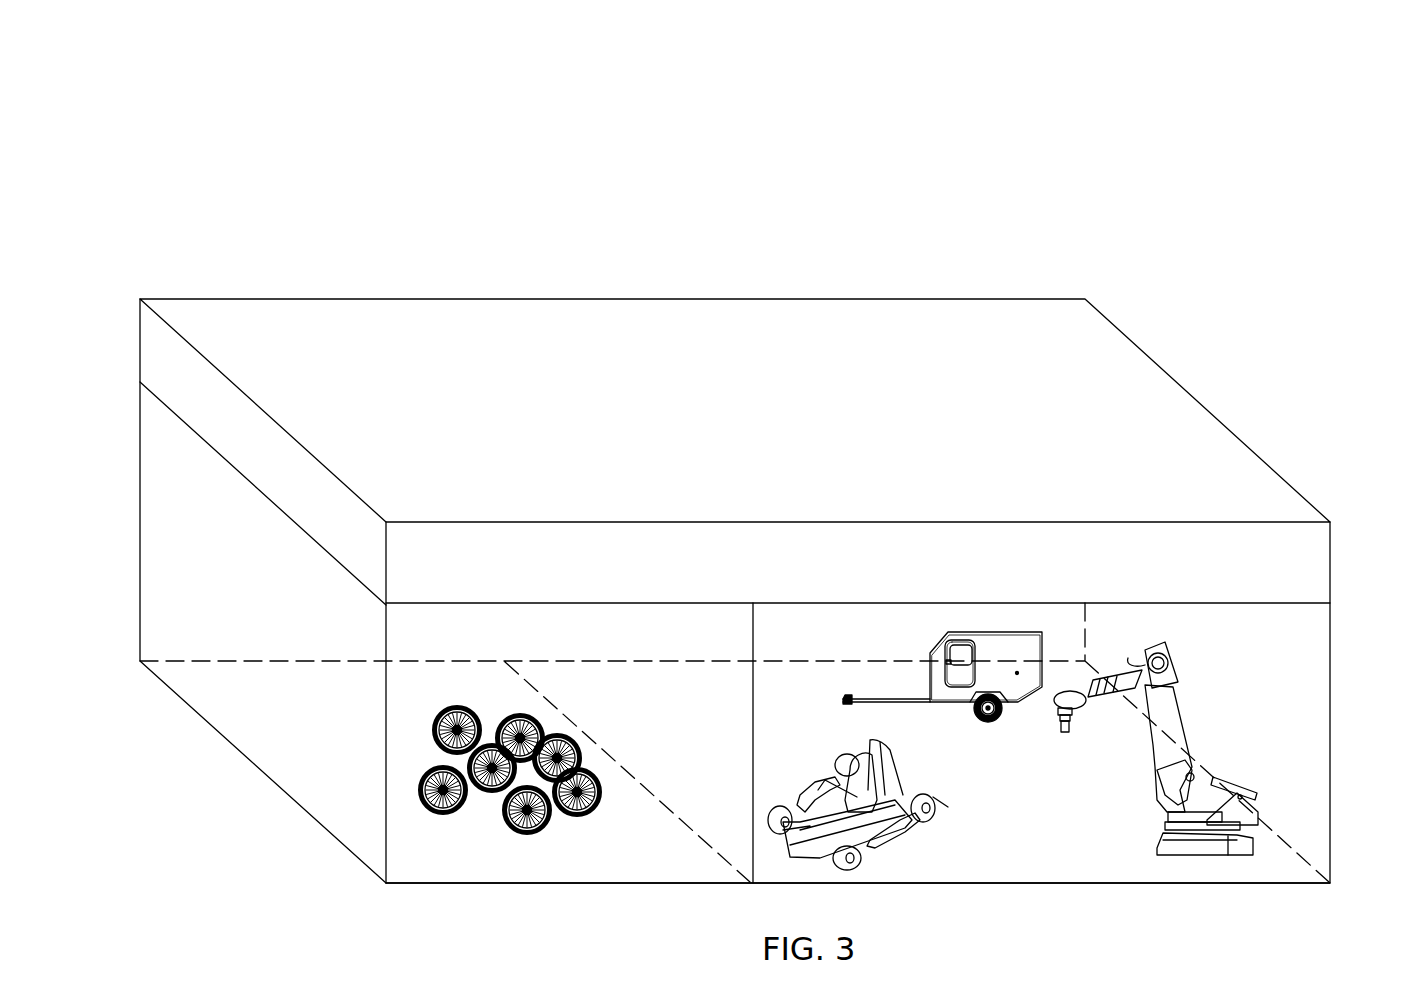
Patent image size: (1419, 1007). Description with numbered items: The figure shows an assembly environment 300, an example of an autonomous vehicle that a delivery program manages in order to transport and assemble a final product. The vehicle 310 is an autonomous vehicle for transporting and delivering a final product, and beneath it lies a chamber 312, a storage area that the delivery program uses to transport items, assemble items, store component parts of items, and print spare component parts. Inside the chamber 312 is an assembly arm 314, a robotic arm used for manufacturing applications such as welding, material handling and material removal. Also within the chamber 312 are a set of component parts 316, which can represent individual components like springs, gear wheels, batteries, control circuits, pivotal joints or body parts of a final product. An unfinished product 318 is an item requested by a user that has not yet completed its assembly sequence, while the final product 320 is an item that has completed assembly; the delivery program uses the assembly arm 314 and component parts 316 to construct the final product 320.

The assembly environment 300 is at (1285, 127).
The vehicle 310 is at (1190, 418).
The chamber 312 is at (995, 885).
The assembly arm 314 is at (1216, 857).
The component part 316 is at (518, 837).
The unfinished product 318 is at (917, 830).
The final product 320 is at (1027, 643).